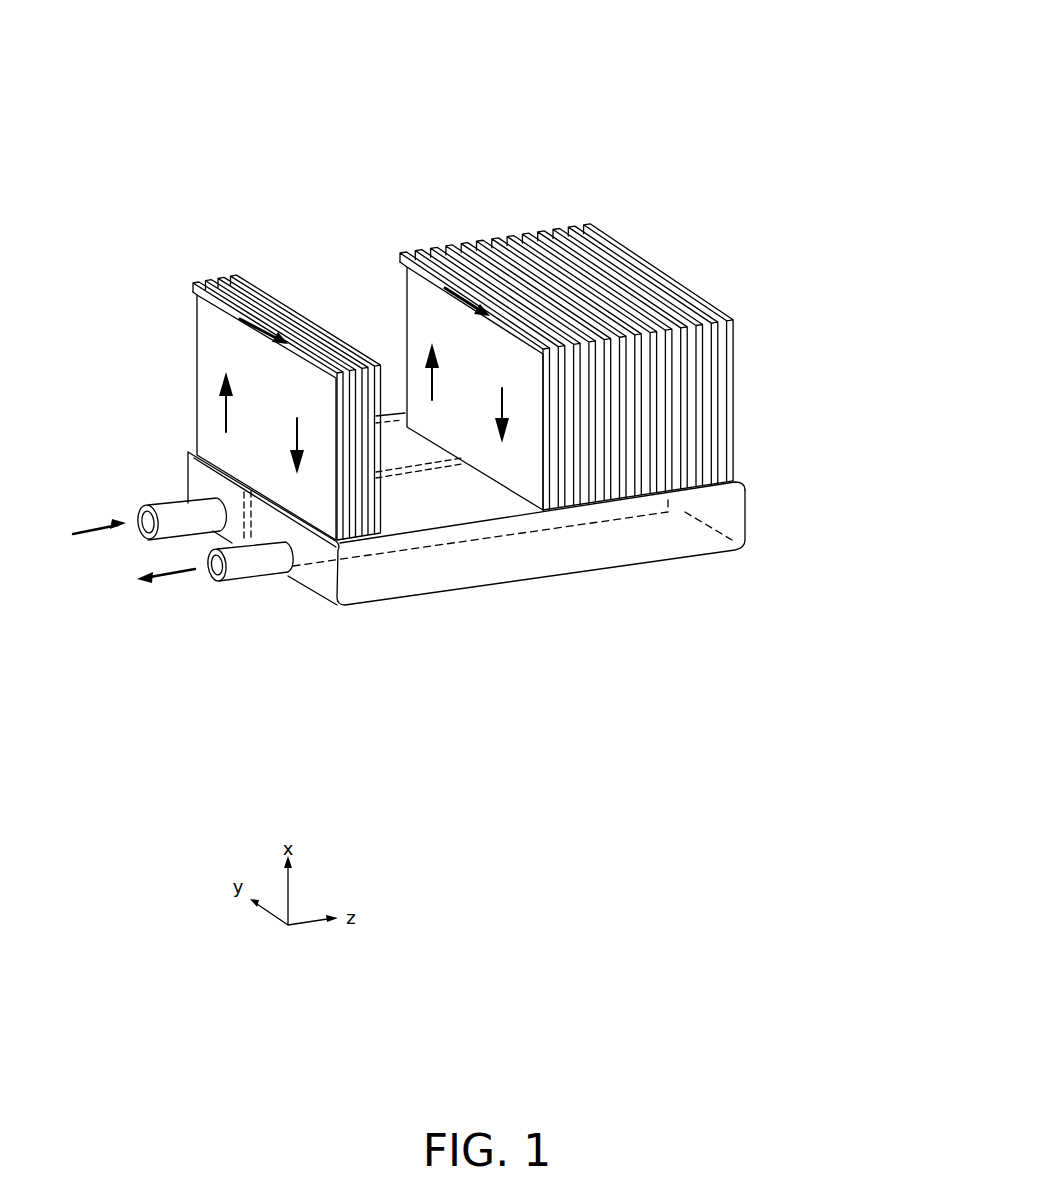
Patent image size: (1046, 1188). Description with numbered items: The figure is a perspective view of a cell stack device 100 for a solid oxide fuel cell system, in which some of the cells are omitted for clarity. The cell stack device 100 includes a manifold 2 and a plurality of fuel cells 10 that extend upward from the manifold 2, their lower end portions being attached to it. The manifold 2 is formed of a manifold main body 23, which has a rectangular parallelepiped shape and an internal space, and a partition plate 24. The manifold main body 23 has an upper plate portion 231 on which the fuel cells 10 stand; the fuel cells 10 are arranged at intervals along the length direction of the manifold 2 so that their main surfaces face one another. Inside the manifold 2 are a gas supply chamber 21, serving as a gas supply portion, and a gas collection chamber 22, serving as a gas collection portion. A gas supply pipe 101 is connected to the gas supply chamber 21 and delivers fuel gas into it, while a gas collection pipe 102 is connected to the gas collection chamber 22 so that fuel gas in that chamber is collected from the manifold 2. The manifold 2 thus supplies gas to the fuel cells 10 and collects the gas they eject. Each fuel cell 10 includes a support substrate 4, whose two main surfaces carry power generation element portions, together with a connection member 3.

The cell stack device 100 is at (442, 142).
The fuel cell 10 is at (177, 372).
The connection member 3 is at (215, 282).
The support substrate 4 is at (198, 338).
The gas supply chamber 21 is at (405, 452).
The gas collection chamber 22 is at (477, 520).
The manifold 2 is at (292, 583).
The manifold main body 23 is at (331, 583).
The upper plate portion 231 is at (735, 465).
The partition plate 24 is at (447, 497).
The gas supply pipe 101 is at (160, 507).
The gas collection pipe 102 is at (243, 573).